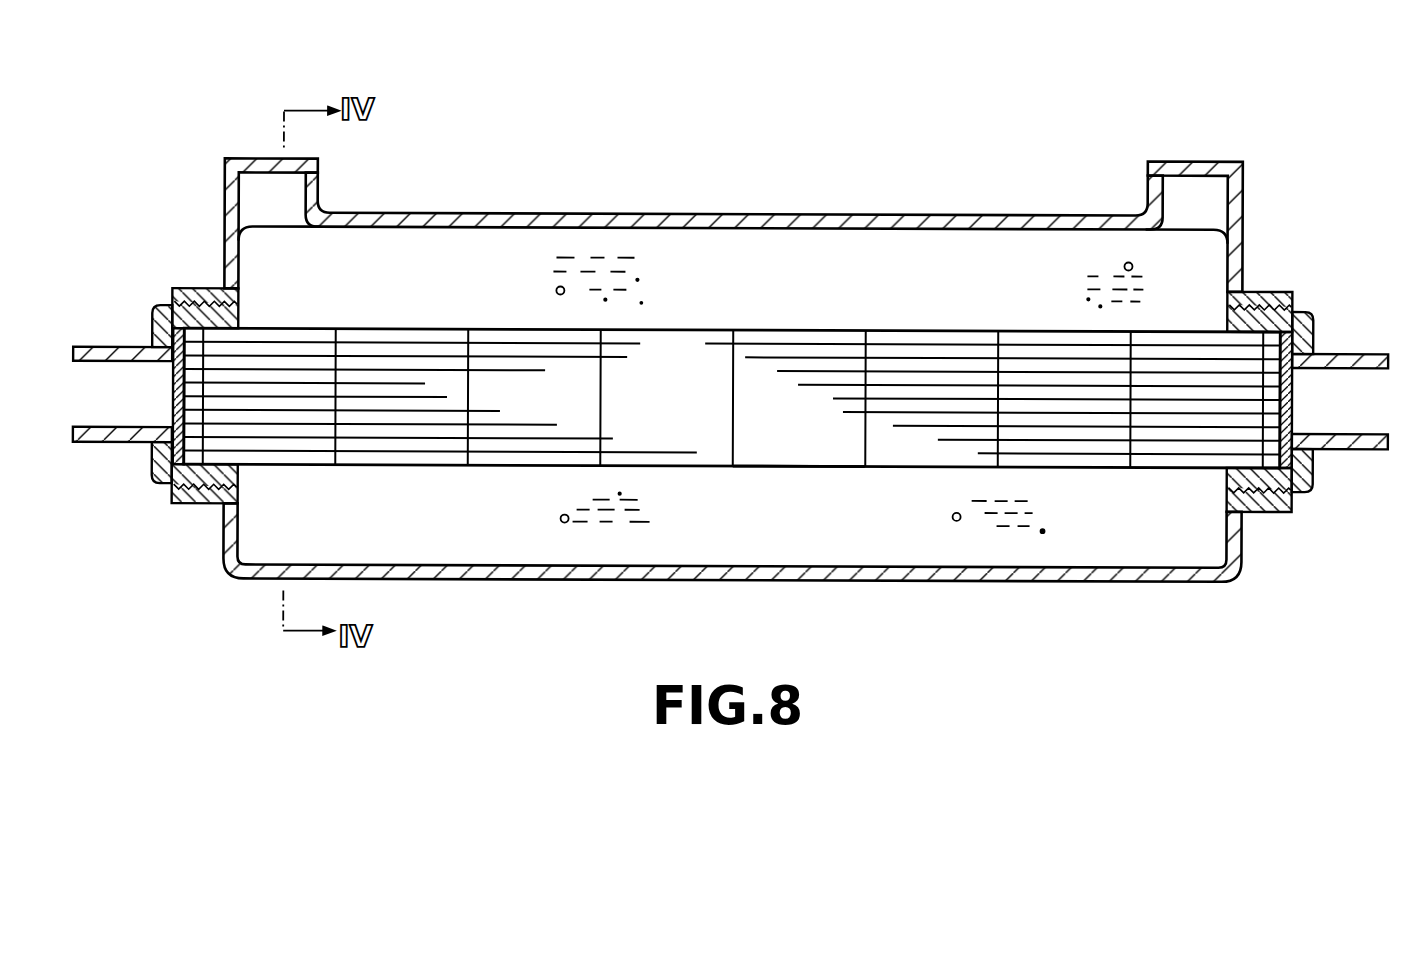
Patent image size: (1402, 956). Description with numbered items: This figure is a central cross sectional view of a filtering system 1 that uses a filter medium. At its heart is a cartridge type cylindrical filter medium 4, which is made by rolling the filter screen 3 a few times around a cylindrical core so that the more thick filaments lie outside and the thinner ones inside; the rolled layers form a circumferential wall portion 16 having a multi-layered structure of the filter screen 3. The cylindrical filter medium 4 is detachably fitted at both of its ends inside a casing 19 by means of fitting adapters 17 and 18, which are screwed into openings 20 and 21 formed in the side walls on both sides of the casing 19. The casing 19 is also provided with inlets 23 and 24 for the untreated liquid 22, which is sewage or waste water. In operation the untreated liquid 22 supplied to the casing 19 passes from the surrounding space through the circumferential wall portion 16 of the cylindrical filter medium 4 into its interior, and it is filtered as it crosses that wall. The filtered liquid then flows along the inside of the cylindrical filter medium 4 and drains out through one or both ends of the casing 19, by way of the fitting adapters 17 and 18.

The heat exchanger 1 is at (423, 455).
The filter screen 3 is at (942, 331).
The cylindrical filter medium 4 is at (788, 472).
The circumferential wall portion 16 is at (420, 335).
The fitting adapter 17 is at (108, 351).
The fitting adapter 18 is at (1353, 351).
The casing 19 is at (727, 219).
The opening 20 is at (189, 290).
The opening 21 is at (1271, 296).
The untreated liquid 22 is at (597, 268).
The inlet 23 is at (258, 176).
The inlet 24 is at (1196, 184).